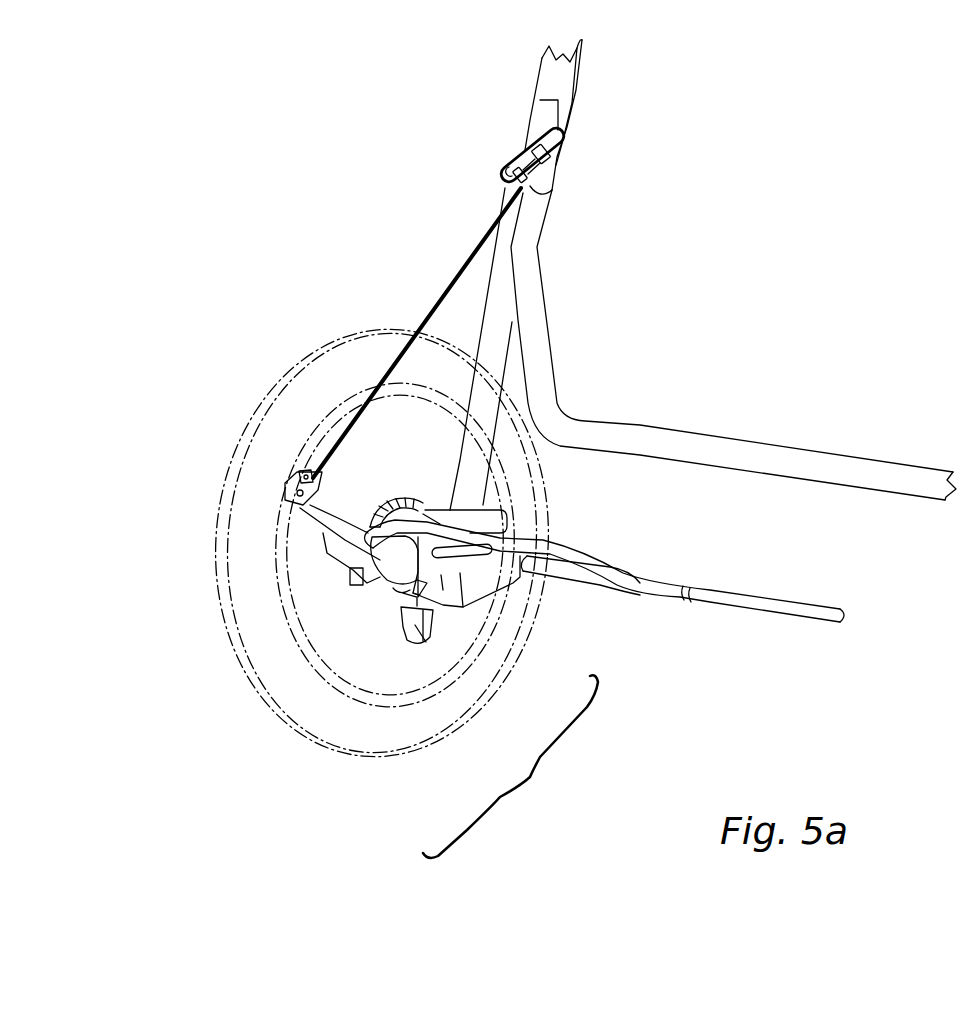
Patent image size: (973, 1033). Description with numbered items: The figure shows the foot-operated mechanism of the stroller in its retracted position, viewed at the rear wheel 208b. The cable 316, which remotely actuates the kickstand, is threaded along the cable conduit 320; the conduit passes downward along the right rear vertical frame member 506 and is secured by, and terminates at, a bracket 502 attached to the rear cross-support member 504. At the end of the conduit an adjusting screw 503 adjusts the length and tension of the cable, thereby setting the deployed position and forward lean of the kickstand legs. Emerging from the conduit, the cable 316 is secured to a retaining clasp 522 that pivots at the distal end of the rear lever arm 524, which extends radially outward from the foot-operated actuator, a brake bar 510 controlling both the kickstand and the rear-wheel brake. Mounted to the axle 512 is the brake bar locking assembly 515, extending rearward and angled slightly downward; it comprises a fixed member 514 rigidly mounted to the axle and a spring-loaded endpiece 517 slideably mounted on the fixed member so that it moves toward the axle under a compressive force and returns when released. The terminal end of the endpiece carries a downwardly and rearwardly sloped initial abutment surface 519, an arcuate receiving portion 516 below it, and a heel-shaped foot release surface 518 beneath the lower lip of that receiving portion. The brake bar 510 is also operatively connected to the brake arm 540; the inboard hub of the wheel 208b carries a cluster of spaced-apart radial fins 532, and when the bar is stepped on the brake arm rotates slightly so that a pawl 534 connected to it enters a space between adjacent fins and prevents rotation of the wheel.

The wheel 208b is at (290, 380).
The cable 316 is at (467, 262).
The cable conduit 320 is at (573, 70).
The bracket 502 is at (511, 160).
The adjusting screw 503 is at (527, 182).
The rear cross-support member 504 is at (778, 458).
The right rear vertical frame member 506 is at (500, 365).
The brake bar 510 is at (563, 547).
The axle 512 is at (777, 607).
The fixed member 514 is at (490, 573).
The brake bar locking assembly 515 is at (510, 766).
The arcuate receiving portion 516 is at (417, 595).
The spring-loaded endpiece 517 is at (441, 575).
The heel-shaped foot release surface 518 is at (420, 595).
The initial abutment surface 519 is at (407, 592).
The retaining clasp 522 is at (290, 488).
The rear lever arm 524 is at (327, 533).
The radial fins 532 is at (405, 500).
The pawl 534 is at (367, 577).
The brake arm 540 is at (410, 588).